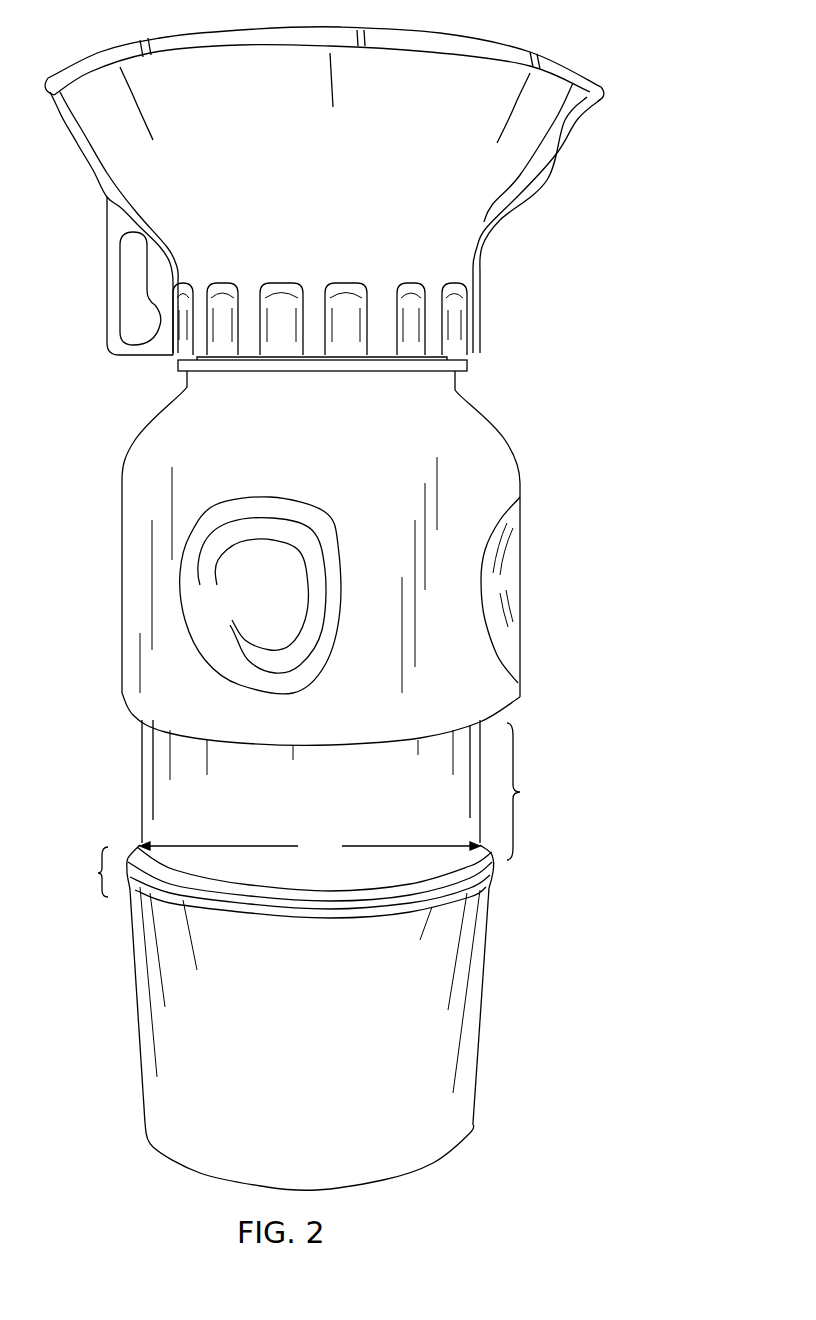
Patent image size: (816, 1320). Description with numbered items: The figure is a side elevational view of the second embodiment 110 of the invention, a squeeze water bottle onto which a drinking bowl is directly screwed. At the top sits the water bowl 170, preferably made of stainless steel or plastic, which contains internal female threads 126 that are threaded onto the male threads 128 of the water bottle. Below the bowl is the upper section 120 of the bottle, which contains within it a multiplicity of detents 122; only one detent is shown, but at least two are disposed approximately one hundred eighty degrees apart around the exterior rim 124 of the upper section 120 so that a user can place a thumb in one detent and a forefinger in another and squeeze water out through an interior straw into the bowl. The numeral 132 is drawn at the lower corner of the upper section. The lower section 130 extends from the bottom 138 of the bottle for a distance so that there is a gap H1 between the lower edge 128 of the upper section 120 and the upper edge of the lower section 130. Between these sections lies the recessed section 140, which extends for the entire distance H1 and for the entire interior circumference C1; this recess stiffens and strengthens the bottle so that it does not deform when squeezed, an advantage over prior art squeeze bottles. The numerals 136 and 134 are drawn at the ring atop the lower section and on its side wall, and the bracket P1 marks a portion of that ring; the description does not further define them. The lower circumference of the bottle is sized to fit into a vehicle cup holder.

The second embodiment water bottle 110 is at (580, 435).
The water bowl 170 is at (357, 176).
The internal female threads 126 is at (194, 359).
The male threads 128 is at (468, 366).
The exterior rim 124 is at (135, 625).
The lower body corner 132 is at (520, 697).
The upper section 120 is at (218, 548).
The detent 122 is at (515, 585).
The recessed section 140 is at (167, 770).
The base ring 136 is at (477, 870).
The lower section 130 is at (462, 1028).
The base side wall 134 is at (155, 1005).
The bottom 138 is at (433, 1163).
The gap distance H1 is at (534, 791).
The interior circumference C1 is at (310, 848).
The ring portion dimension P1 is at (87, 872).